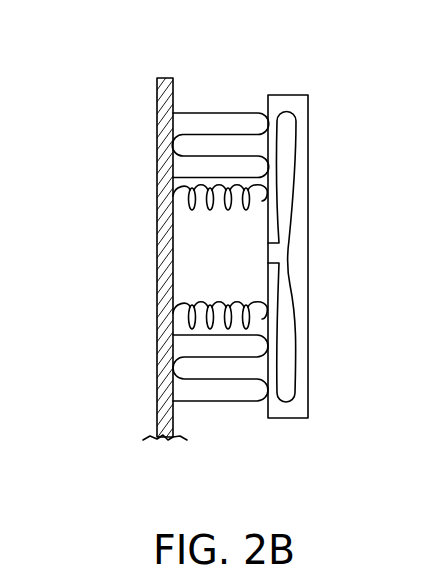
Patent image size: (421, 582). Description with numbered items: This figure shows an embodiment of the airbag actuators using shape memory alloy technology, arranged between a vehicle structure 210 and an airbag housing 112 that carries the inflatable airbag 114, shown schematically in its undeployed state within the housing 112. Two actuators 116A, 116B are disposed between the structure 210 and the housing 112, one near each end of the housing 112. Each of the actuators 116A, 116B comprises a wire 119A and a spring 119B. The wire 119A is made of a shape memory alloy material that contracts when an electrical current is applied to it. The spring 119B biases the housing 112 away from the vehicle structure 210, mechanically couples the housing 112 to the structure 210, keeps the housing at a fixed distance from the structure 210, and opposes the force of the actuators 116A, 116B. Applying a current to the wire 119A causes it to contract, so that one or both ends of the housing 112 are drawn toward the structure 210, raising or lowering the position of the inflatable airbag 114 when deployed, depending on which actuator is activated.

The vehicle structure 210 is at (157, 86).
The airbag housing 112 is at (308, 392).
The inflatable airbag 114 is at (295, 190).
The actuator 116A is at (268, 67).
The actuator 116B is at (268, 443).
The wire 119A is at (223, 112).
The spring 119B is at (230, 212).